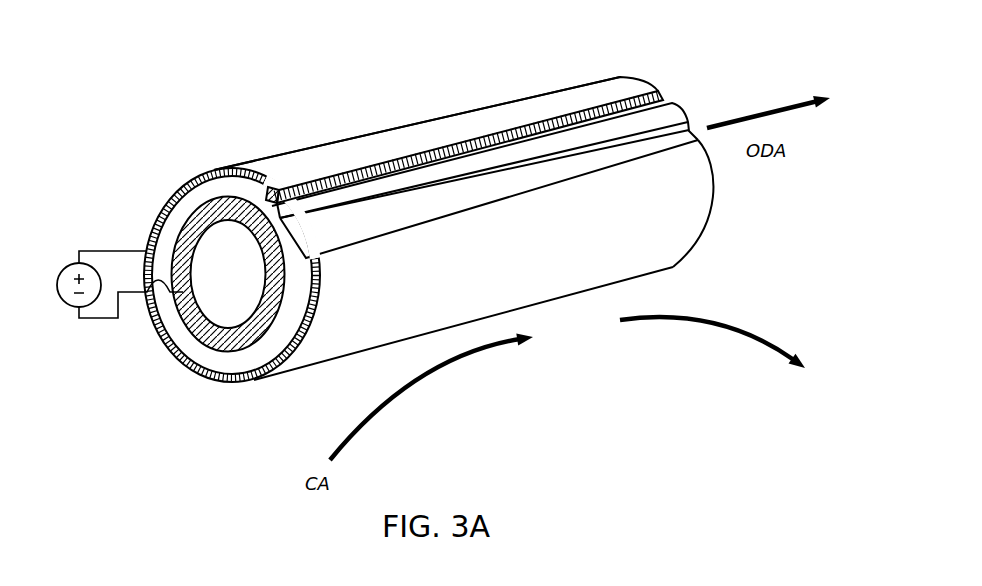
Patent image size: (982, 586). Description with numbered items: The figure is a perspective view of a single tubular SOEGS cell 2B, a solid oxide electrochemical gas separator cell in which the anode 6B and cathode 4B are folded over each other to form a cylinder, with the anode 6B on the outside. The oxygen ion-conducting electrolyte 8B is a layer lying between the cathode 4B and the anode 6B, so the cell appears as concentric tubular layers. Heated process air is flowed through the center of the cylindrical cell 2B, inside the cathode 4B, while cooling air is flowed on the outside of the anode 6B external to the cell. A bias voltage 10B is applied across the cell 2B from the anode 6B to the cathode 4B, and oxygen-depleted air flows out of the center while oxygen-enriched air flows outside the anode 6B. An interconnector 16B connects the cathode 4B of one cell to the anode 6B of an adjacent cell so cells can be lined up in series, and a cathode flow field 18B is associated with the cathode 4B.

The tubular SOEGS cell 2B is at (563, 107).
The cathode 4B is at (177, 253).
The anode 6B is at (192, 178).
The electrolyte 8B is at (173, 220).
The bias voltage 10B is at (65, 305).
The interconnector 16B is at (400, 193).
The cathode flow field 18B is at (203, 347).